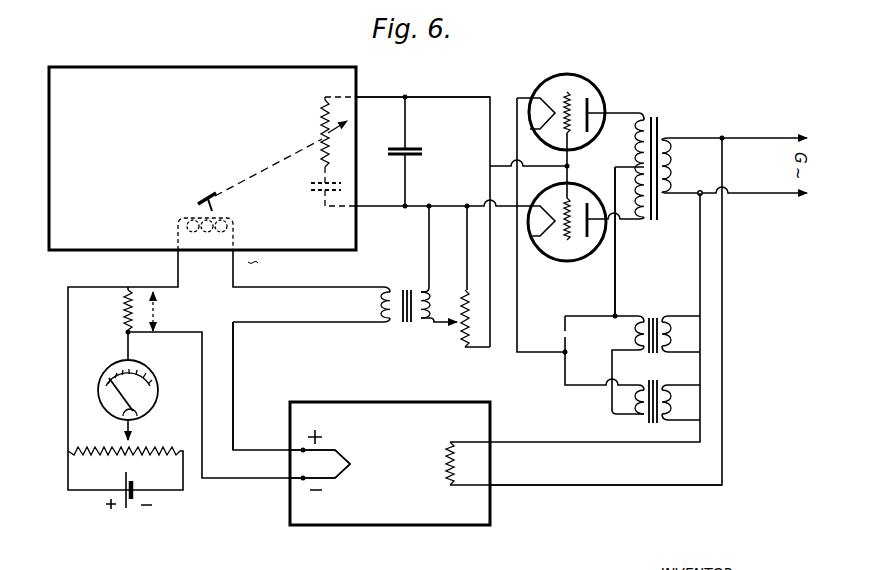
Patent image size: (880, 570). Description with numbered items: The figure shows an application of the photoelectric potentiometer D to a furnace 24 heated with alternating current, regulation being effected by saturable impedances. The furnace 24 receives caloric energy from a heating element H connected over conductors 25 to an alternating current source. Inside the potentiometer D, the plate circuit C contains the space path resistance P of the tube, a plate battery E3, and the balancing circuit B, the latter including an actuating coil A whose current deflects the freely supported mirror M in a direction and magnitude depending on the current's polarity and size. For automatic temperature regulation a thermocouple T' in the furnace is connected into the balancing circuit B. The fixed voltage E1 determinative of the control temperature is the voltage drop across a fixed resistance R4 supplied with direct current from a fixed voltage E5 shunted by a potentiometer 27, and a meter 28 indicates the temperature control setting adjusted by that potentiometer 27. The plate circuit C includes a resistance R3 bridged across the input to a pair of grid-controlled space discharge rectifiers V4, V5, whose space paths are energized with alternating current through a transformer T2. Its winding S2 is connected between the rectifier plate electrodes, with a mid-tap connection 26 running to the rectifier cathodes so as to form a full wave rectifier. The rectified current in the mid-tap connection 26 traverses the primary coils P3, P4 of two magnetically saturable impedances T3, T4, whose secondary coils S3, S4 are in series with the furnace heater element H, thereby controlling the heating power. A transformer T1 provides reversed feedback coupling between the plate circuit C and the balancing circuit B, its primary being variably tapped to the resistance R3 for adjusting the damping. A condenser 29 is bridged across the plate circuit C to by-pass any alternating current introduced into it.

The photoelectric potentiometer D is at (186, 70).
The space path resistance P is at (321, 129).
The movable element or mirror M is at (197, 196).
The plate battery E3 is at (312, 186).
The actuating coil A is at (209, 238).
The plate circuit C is at (437, 97).
The condenser 29 is at (408, 150).
The grid-controlled space discharge rectifier V4 is at (585, 79).
The grid-controlled space discharge rectifier V5 is at (579, 259).
The secondary winding S2 is at (621, 168).
The transformer T2 is at (649, 151).
The mid-tap connection 26 is at (615, 272).
The transformer T1 is at (405, 290).
The resistance R3 is at (470, 308).
The resistor R4 is at (124, 311).
The fixed voltage E1 is at (157, 311).
The meter 28 is at (158, 392).
The potentiometer 27 is at (141, 446).
The fixed voltage E5 is at (132, 511).
The balancing circuit B is at (229, 376).
The thermocouple T' is at (324, 469).
The furnace 24 is at (388, 530).
The heating element H is at (446, 462).
The conductors 25 is at (575, 481).
The magnetically saturable impedance T3 is at (648, 319).
The primary coil P3 is at (636, 339).
The secondary coil S3 is at (672, 339).
The magnetically saturable impedance T4 is at (646, 390).
The primary coil P4 is at (630, 403).
The secondary coil S4 is at (678, 403).